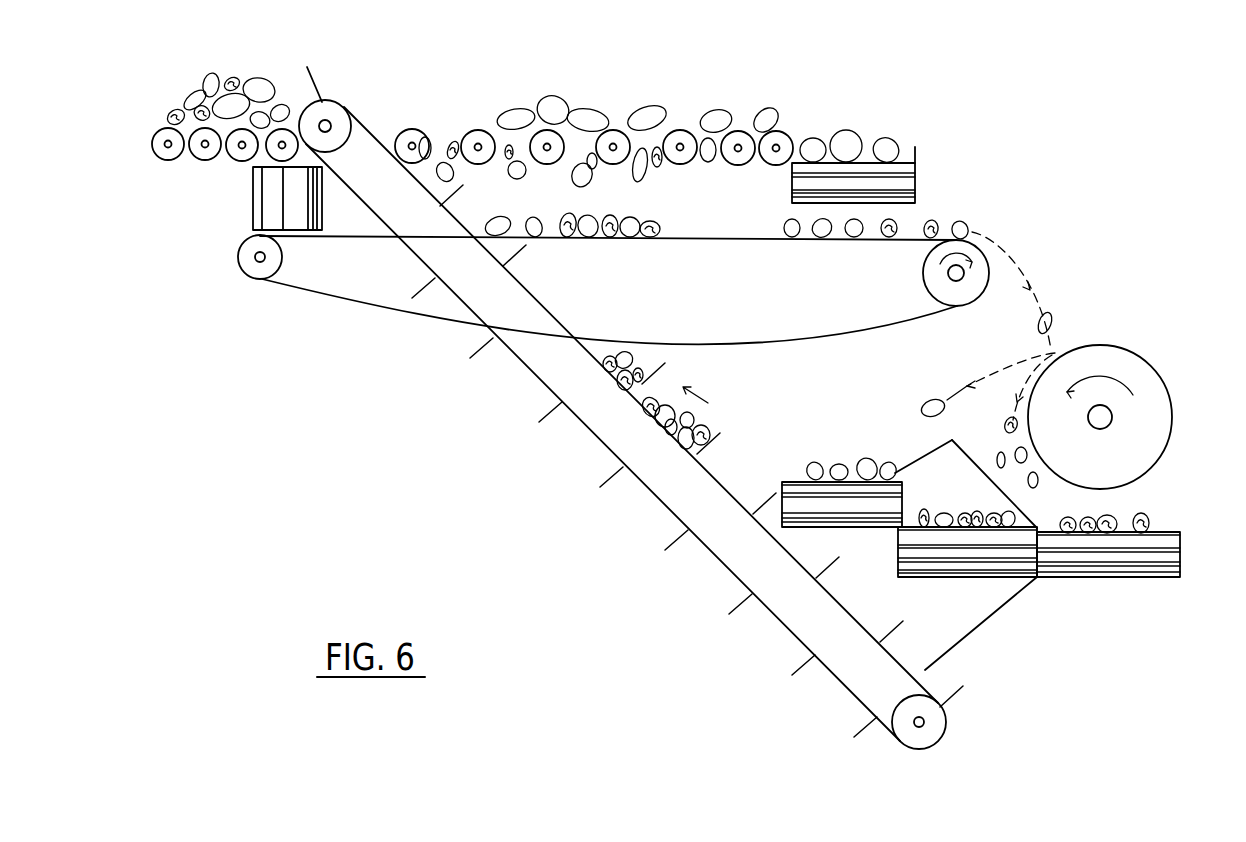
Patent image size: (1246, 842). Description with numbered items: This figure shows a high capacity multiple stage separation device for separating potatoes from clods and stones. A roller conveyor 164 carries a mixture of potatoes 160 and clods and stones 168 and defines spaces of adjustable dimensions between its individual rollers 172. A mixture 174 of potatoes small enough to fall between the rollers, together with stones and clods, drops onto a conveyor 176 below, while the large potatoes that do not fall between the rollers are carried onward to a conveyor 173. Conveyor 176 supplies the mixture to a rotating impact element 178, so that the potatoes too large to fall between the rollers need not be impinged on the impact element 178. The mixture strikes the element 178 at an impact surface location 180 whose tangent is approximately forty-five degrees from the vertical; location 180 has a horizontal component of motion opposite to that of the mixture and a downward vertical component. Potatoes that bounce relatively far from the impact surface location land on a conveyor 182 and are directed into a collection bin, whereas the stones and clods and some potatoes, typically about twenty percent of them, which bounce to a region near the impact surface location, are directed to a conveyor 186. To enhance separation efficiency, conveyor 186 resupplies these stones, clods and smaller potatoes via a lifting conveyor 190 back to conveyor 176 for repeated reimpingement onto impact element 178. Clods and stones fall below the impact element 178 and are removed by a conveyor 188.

The potatoes 160 is at (585, 112).
The roller conveyor 164 is at (702, 110).
The clods and stones 168 is at (230, 80).
The rollers 172 is at (745, 140).
The conveyor 173 is at (915, 167).
The mixture 174 is at (613, 218).
The conveyor 176 is at (837, 342).
The impact element 178 is at (1163, 370).
The impact surface location 180 is at (1057, 352).
The conveyor 182 is at (793, 480).
The conveyor 186 is at (988, 577).
The conveyor 188 is at (1110, 577).
The lifting conveyor 190 is at (920, 675).